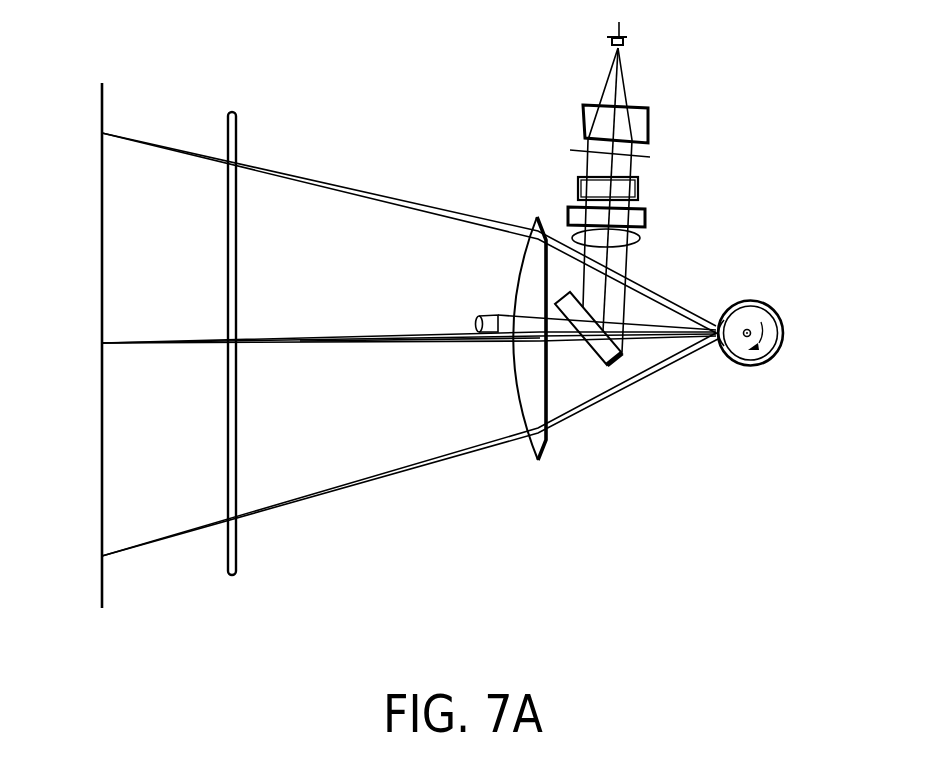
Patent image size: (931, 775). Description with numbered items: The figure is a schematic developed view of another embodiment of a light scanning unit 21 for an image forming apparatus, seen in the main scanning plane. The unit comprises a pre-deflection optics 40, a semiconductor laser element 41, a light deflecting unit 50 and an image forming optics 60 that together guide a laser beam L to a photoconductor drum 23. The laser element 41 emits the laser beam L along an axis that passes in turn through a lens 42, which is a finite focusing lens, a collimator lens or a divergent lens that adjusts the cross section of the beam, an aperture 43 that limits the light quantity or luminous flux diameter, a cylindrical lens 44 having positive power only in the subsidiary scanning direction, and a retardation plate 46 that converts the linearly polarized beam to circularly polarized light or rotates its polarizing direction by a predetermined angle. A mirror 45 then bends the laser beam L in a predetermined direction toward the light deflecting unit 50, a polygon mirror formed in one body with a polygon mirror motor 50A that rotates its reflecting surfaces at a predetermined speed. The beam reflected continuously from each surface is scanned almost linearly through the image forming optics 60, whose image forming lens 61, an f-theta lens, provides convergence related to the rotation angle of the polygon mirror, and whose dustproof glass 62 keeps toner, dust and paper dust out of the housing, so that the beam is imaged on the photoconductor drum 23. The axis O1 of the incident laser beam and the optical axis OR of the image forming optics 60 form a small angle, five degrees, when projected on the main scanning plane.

The light scanning unit 21 is at (380, 96).
The photoconductor drum 23 is at (104, 600).
The pre-deflection optics 40 is at (556, 362).
The semiconductor laser element 41 is at (627, 39).
The lens 42 is at (648, 125).
The aperture 43 is at (650, 157).
The cylindrical lens 44 is at (638, 190).
The mirror 45 is at (599, 357).
The retardation plate 46 is at (645, 218).
The light deflecting unit 50 is at (750, 336).
The polygon mirror motor 50A is at (765, 300).
The image forming optics 60 is at (383, 370).
The image forming lens 61 is at (529, 363).
The dustproof glass 62 is at (238, 557).
The laser beam L is at (640, 241).
The axis of incident laser beam O1 is at (487, 316).
The optical axis of image forming optics OR is at (459, 345).